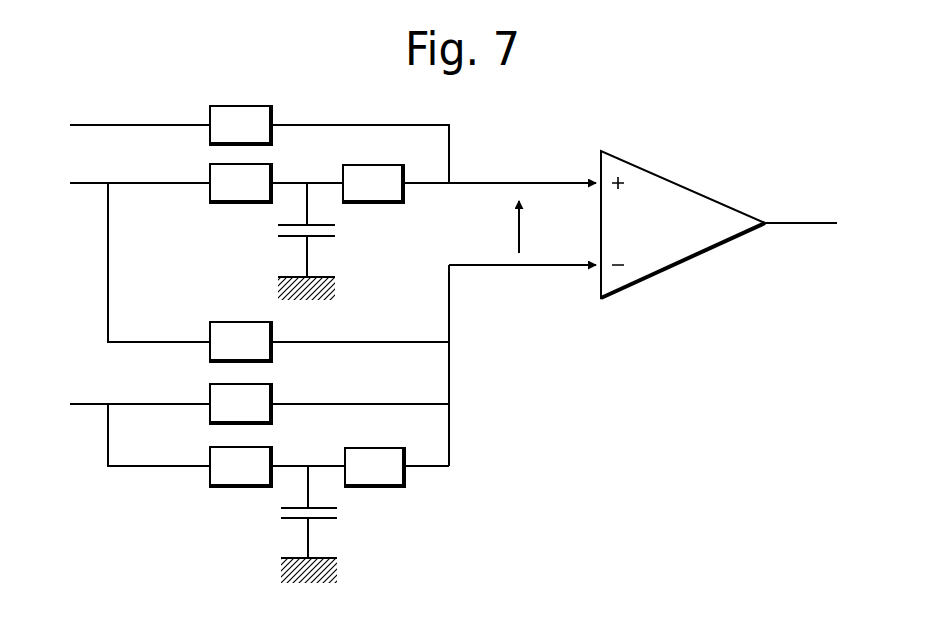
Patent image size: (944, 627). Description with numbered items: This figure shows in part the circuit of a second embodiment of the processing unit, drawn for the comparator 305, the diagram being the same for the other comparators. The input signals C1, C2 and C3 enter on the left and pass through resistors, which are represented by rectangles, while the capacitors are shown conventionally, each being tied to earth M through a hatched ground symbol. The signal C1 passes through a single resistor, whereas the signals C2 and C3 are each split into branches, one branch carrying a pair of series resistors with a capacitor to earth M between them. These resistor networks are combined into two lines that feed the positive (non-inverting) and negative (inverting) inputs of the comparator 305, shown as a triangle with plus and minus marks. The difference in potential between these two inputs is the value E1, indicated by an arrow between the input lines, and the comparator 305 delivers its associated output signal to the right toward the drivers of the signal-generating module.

The comparator 305 is at (681, 185).
The signal C1 is at (243, 144).
The signal C2 is at (317, 263).
The signal C3 is at (317, 411).
The earth M is at (337, 292).
The difference in potential E1 is at (538, 227).